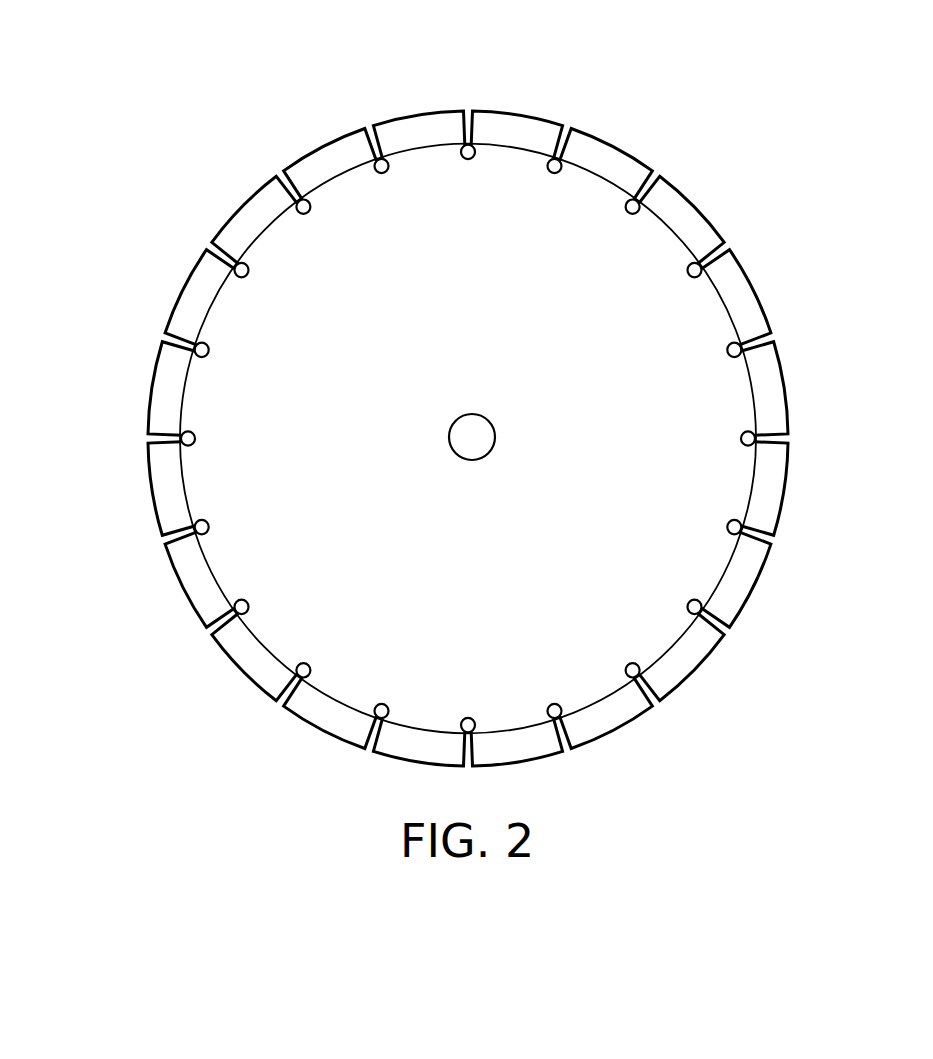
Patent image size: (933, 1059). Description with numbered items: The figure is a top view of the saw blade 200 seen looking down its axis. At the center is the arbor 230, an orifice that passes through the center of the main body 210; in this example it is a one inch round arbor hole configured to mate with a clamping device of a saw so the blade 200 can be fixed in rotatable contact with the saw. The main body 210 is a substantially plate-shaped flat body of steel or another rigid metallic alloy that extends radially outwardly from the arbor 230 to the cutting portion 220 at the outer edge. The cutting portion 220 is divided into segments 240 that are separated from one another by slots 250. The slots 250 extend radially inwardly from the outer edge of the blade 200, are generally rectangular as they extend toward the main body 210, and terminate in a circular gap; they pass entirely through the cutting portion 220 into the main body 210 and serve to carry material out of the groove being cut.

The blade 200 is at (519, 450).
The main body 210 is at (550, 439).
The cutting portion 220 is at (228, 210).
The arbor 230 is at (431, 414).
The segments 240 is at (465, 733).
The slots 250 is at (183, 235).